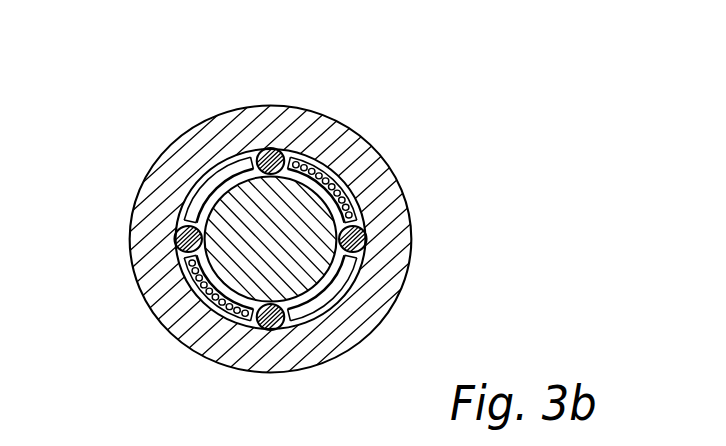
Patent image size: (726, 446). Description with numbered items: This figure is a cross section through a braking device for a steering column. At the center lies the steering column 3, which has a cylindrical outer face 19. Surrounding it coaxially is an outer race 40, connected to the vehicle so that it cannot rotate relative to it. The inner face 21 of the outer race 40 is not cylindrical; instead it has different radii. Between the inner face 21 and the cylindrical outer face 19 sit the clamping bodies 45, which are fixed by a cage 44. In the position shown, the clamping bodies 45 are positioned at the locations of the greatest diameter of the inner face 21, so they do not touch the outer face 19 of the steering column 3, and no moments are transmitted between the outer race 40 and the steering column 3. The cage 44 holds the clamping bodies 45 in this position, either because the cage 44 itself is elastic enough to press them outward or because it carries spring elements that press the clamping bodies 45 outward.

The steering column 3 is at (217, 210).
The cylindrical outer face 19 is at (195, 283).
The inner face 21 is at (366, 222).
The outer race 40 is at (203, 138).
The cage 44 is at (345, 291).
The clamping bodies 45 is at (288, 152).